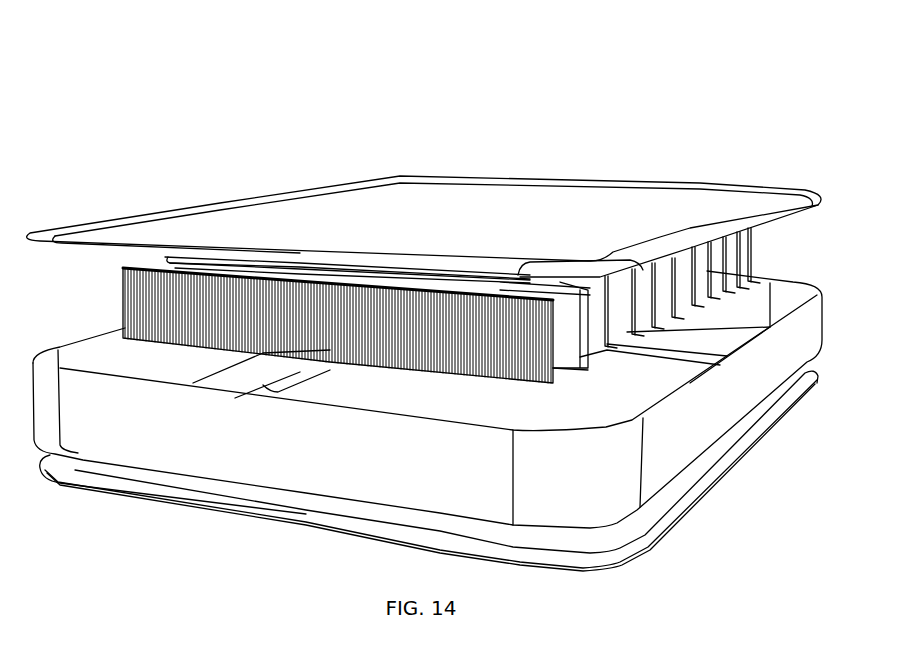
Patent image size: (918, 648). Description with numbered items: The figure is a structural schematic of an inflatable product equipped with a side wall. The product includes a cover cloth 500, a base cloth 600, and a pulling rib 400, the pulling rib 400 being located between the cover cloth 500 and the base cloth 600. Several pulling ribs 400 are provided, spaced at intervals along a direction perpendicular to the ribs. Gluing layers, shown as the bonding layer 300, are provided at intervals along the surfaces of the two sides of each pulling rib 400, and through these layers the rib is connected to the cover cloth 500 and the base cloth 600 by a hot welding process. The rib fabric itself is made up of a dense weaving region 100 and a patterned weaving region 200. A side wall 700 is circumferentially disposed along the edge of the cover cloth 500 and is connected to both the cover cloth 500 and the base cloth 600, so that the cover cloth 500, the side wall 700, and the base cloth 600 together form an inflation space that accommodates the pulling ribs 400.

The dense weaving region 100 is at (292, 262).
The patterned weaving region 200 is at (366, 272).
The bonding layer 300 is at (230, 255).
The pulling rib 400 is at (366, 40).
The cover cloth 500 is at (481, 202).
The base cloth 600 is at (165, 485).
The side wall 700 is at (697, 400).